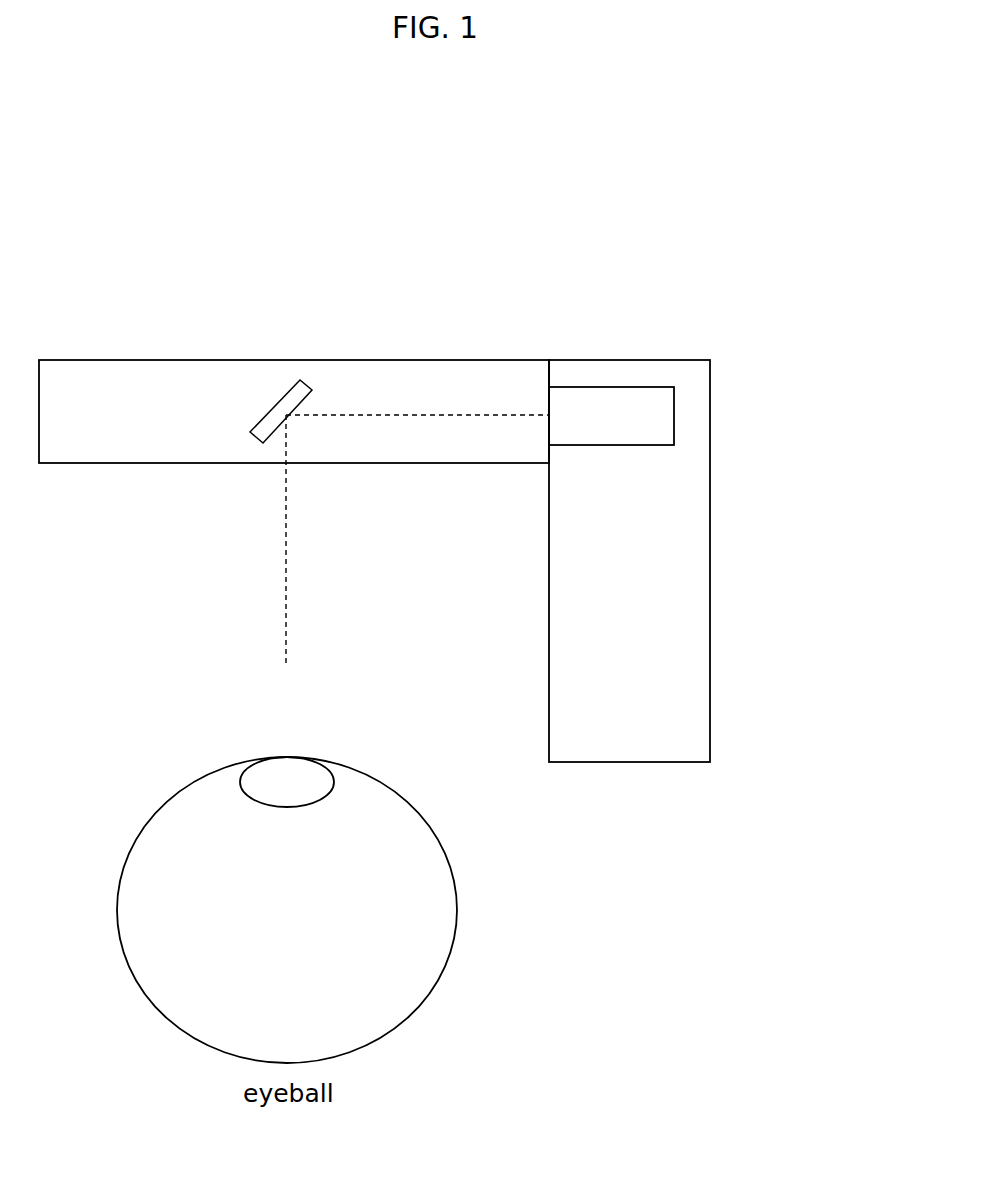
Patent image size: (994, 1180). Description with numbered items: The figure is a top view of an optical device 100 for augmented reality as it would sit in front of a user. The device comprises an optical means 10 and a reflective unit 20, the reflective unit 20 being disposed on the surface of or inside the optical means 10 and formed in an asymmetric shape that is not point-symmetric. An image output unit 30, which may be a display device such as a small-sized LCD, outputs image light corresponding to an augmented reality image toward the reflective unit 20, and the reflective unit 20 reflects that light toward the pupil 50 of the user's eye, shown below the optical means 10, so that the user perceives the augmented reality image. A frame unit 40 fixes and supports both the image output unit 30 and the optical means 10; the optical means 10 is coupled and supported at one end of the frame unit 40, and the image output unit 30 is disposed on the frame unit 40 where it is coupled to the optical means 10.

The optical device for augmented reality 100 is at (688, 215).
The optical means 10 is at (477, 359).
The reflective unit 20 is at (307, 382).
The image output unit 30 is at (675, 415).
The frame unit 40 is at (711, 573).
The pupil 50 is at (258, 758).